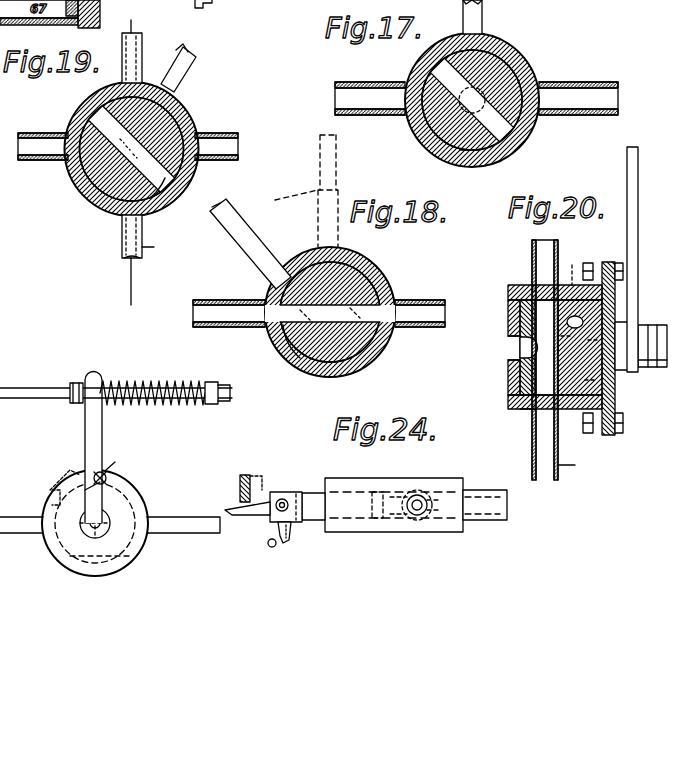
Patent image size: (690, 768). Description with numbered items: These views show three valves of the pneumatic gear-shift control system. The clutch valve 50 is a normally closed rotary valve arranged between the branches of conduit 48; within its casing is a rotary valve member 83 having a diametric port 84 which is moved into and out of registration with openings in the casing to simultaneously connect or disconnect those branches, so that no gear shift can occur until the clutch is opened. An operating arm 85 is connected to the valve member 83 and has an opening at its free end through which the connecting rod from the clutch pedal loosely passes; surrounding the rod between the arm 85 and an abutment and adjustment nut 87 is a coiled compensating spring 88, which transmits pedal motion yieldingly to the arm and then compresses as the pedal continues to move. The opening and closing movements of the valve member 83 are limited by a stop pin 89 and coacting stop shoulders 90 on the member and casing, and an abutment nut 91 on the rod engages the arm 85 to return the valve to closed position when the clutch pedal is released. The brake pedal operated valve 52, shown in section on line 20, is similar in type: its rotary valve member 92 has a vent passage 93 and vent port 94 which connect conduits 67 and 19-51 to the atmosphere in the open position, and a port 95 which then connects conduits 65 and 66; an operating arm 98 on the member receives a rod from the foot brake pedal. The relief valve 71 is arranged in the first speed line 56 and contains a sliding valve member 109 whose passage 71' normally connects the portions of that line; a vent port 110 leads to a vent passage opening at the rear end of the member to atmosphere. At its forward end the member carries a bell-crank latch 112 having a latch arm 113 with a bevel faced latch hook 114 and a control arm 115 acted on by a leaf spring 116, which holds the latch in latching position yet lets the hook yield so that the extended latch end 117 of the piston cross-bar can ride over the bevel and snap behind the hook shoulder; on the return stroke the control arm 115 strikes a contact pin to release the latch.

In FIG. 19, the conduit 19-51 is at (172, 248).
In FIG. 20, the conduit 19-51 is at (590, 466).
In FIG. 19, the section line 20 is at (129, 169).
In FIG. 17, the conduit 48 is at (370, 82).
In FIG. 24, the conduit 48 is at (196, 512).
In FIG. 17, the clutch valve 50 is at (522, 70).
In FIG. 18, the clutch valve 50 is at (308, 268).
In FIG. 24, the clutch valve 50 is at (132, 498).
In FIG. 19, the brake pedal operated valve 52 is at (190, 120).
In FIG. 17, the brake pedal operated valve 52 is at (596, 3).
In FIG. 20, the brake pedal operated valve 52 is at (508, 293).
In FIG. 24, the first speed line 56 is at (416, 516).
In FIG. 19, the conduit 65 is at (220, 148).
In FIG. 18, the conduit 65 is at (440, 284).
In FIG. 20, the conduit 65 is at (593, 338).
In FIG. 19, the conduit 66 is at (46, 133).
In FIG. 18, the conduit 66 is at (232, 300).
In FIG. 20, the conduit 66 is at (622, 374).
In FIG. 19, the conduit 67 is at (140, 60).
In FIG. 20, the conduit 67 is at (532, 252).
In FIG. 24, the relief valve 71 is at (394, 493).
In FIG. 24, the passage 71' is at (385, 533).
In FIG. 17, the rotary valve member 83 is at (466, 165).
In FIG. 24, the rotary valve member 83 is at (84, 570).
In FIG. 17, the diametric port 84 is at (500, 130).
In FIG. 24, the diametric port 84 is at (140, 550).
In FIG. 24, the operating arm 85 is at (85, 440).
In FIG. 24, the abutment and adjustment nut 87 is at (218, 386).
In FIG. 24, the coiled abutment motion transmitting and compensating spring 88 is at (140, 385).
In FIG. 24, the stop pin 89 is at (92, 480).
In FIG. 24, the stop shoulders 90 is at (112, 470).
In FIG. 24, the abutment nut 91 is at (72, 400).
In FIG. 19, the rotary valve member 92 is at (100, 198).
In FIG. 18, the rotary valve member 92 is at (385, 368).
In FIG. 20, the rotary valve member 92 is at (520, 318).
In FIG. 24, the rotary valve member 92 is at (56, 490).
In FIG. 19, the vent passage 93 is at (186, 176).
In FIG. 18, the vent passage 93 is at (278, 340).
In FIG. 20, the vent passage 93 is at (524, 412).
In FIG. 20, the vent port 94 is at (514, 380).
In FIG. 20, the port 95 is at (585, 323).
In FIG. 19, the operating arm 98 is at (196, 57).
In FIG. 18, the operating arm 98 is at (274, 212).
In FIG. 20, the operating arm 98 is at (638, 210).
In FIG. 24, the sliding valve member 109 is at (318, 544).
In FIG. 24, the vent port 110 is at (425, 492).
In FIG. 24, the bell-crank locking member or latch 112 is at (252, 515).
In FIG. 24, the latch arm 113 is at (280, 495).
In FIG. 24, the bevel faced latch hook 114 is at (238, 490).
In FIG. 24, the control arm 115 is at (272, 548).
In FIG. 24, the leaf spring 116 is at (290, 535).
In FIG. 24, the extended latch end 117 is at (260, 478).